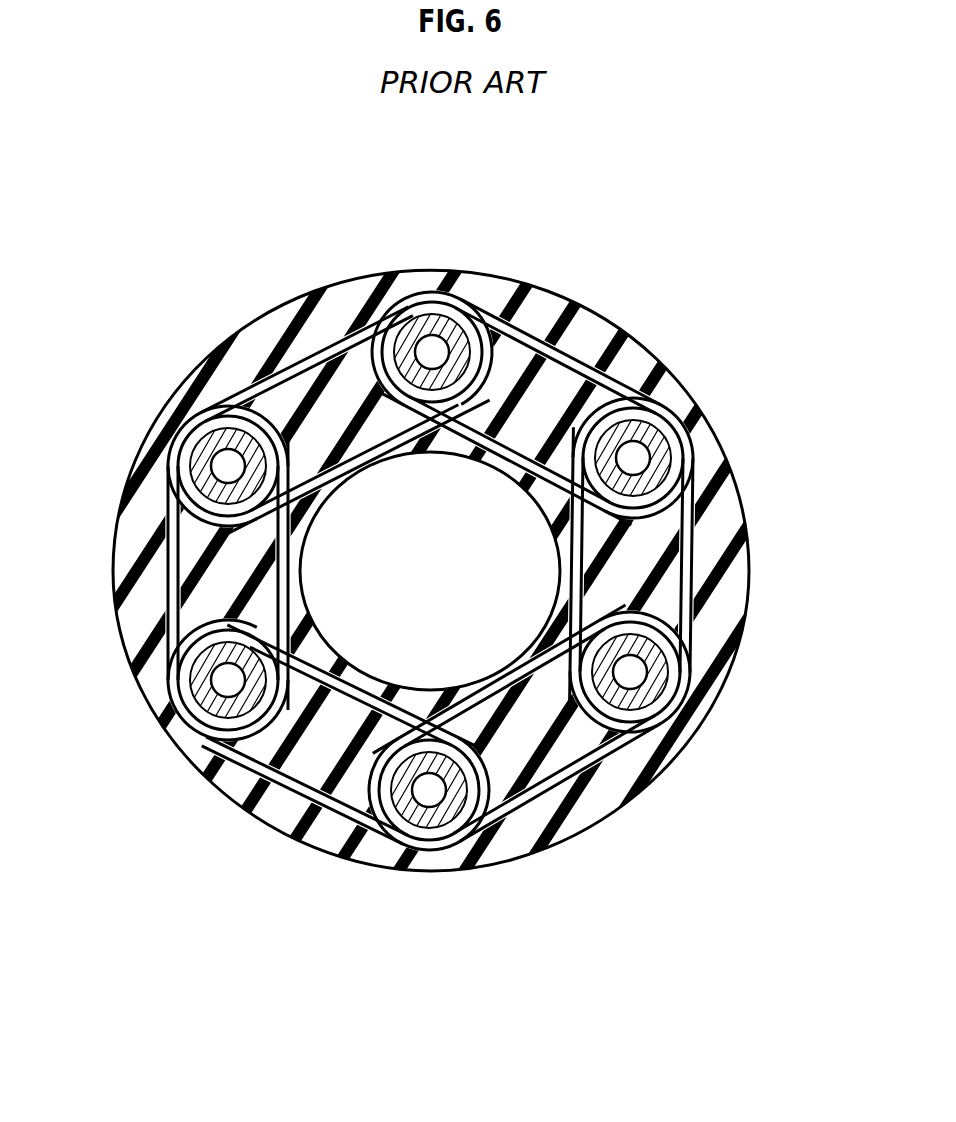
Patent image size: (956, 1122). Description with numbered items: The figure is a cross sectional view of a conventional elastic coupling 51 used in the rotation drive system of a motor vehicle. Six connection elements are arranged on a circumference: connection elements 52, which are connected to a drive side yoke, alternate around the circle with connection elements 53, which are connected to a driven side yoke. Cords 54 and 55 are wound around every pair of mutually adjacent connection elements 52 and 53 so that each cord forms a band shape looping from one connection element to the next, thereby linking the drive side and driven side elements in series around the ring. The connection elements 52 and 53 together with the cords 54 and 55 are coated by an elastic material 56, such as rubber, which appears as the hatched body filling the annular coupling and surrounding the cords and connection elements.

The elastic coupling 51 is at (556, 271).
The connection elements 52 is at (432, 330).
The connection elements 53 is at (207, 453).
The cords 54 is at (283, 373).
The cords 55 is at (567, 342).
The elastic material 56 is at (340, 318).